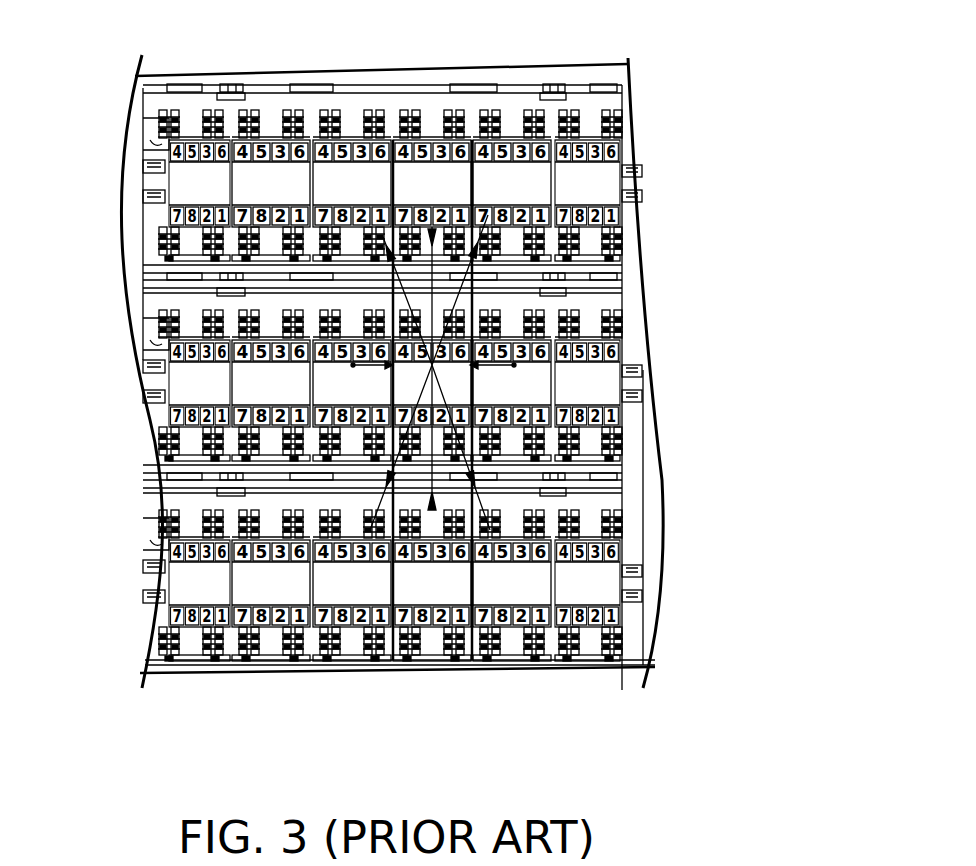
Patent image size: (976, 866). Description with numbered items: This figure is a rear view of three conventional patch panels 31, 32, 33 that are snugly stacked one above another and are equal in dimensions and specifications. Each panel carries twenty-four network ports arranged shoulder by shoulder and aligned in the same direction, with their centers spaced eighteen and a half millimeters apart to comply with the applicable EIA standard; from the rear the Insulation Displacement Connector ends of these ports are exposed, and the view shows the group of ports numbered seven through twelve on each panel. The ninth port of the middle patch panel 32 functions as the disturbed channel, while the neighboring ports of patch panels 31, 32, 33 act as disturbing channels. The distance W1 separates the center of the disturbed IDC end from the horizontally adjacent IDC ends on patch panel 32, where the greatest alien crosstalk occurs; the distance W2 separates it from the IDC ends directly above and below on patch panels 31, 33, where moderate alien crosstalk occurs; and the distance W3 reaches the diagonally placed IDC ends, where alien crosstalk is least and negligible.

The patch panel 31 is at (343, 134).
The patch panel 32 is at (385, 359).
The patch panel 33 is at (343, 612).
The distance W1 is at (433, 378).
The distance W2 is at (424, 368).
The distance W3 is at (441, 366).